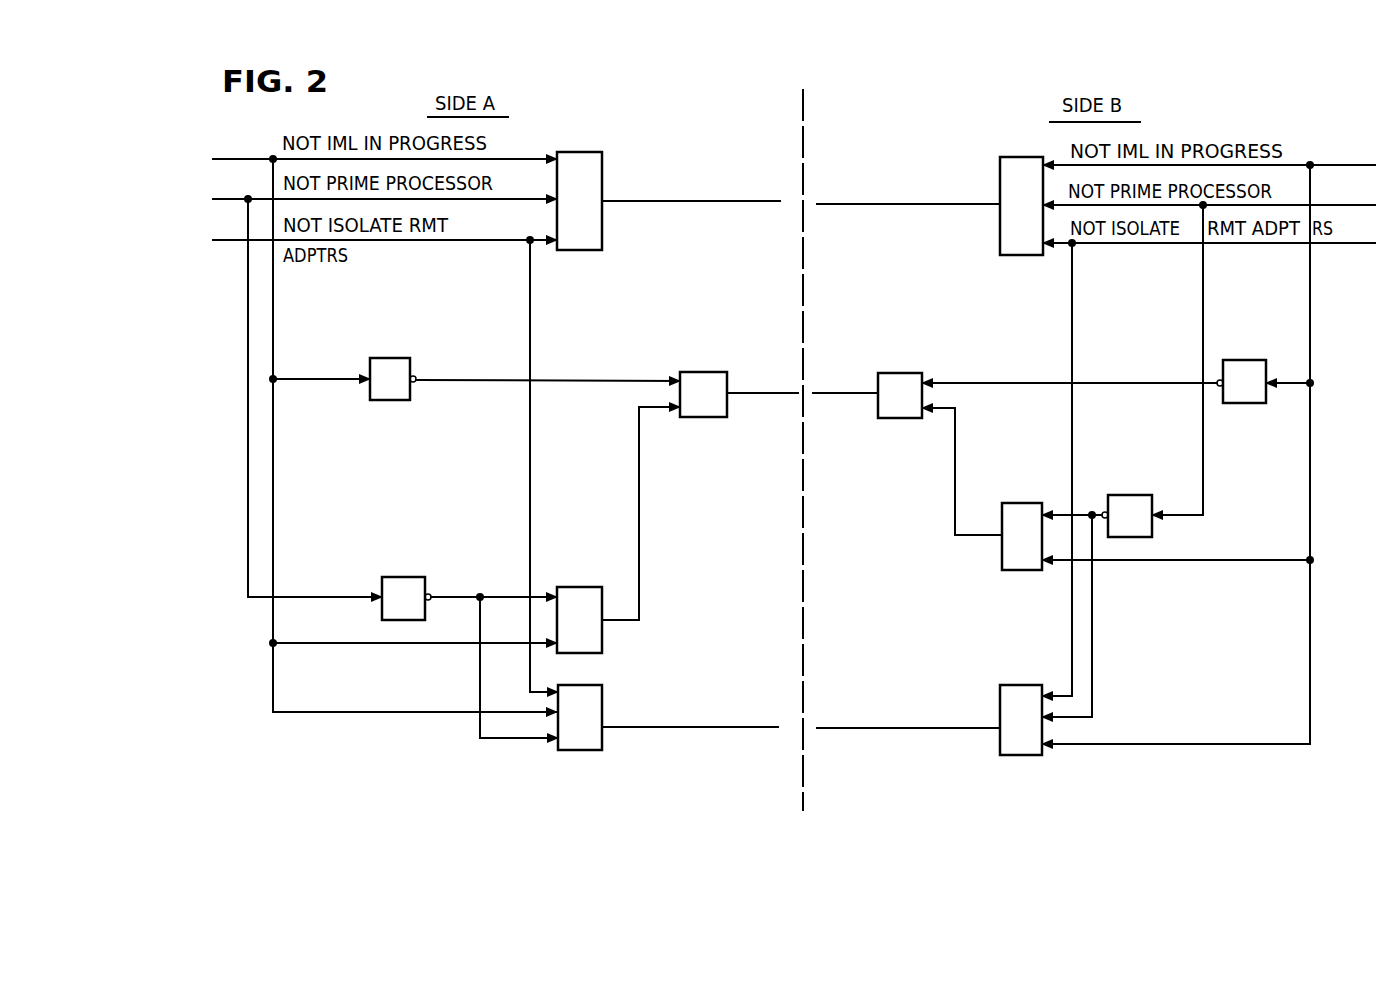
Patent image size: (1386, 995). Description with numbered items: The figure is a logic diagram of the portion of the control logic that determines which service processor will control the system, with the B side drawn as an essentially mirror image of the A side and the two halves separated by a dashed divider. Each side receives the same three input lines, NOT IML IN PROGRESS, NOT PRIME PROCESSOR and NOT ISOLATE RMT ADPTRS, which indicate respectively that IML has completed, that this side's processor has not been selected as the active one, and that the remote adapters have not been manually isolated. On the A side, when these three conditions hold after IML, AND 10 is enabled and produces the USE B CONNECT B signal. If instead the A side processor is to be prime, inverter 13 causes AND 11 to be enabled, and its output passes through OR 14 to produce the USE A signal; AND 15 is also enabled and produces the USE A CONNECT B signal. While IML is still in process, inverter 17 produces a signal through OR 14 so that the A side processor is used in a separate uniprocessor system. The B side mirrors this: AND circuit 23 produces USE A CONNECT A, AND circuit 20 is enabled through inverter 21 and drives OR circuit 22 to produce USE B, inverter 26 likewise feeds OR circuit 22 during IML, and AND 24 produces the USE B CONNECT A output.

The AND 10 is at (598, 152).
The AND 11 is at (590, 587).
The inverter 13 is at (415, 577).
The OR 14 is at (717, 417).
The AND 15 is at (593, 750).
The inverter 17 is at (403, 400).
The AND circuit 20 is at (1027, 570).
The inverter 21 is at (1140, 495).
The OR circuit 22 is at (915, 418).
The AND circuit 23 is at (1004, 160).
The AND gate (USE B CONNECT A) 24 is at (1024, 755).
The inverter 26 is at (1243, 403).